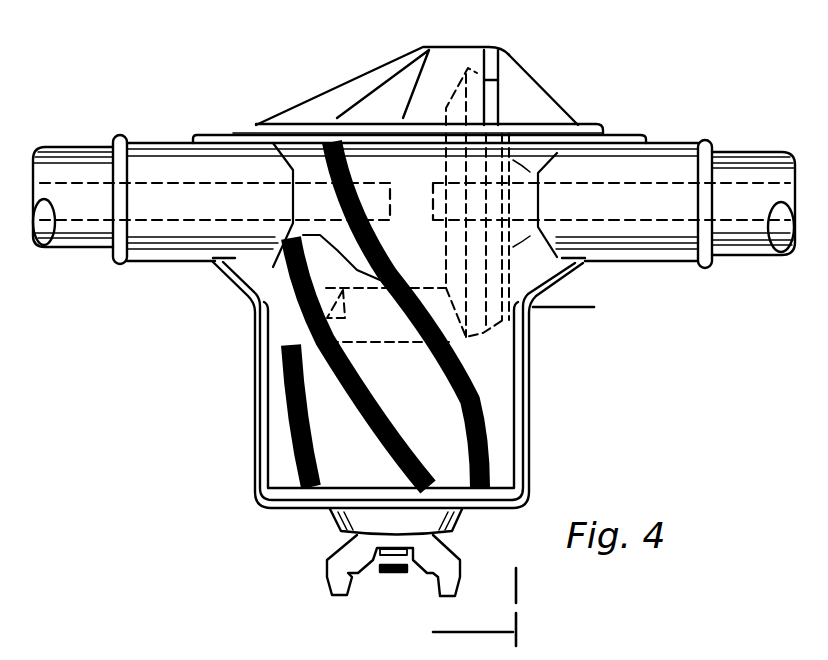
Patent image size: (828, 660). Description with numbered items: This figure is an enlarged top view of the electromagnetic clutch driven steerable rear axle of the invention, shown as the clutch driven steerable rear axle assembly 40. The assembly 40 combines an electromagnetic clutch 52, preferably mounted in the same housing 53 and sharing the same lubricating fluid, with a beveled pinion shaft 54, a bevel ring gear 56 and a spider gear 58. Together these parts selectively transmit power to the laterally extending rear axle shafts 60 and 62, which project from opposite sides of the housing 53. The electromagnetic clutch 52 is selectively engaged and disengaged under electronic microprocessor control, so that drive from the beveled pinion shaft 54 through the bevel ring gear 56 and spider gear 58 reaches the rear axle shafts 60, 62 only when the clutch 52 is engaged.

The clutch driven steerable rear axle assembly 40 is at (247, 93).
The electromagnetic clutch 52 is at (283, 370).
The housing 53 is at (220, 134).
The beveled pinion shaft 54 is at (300, 318).
The bevel ring gear 56 is at (498, 103).
The spider gear 58 is at (373, 123).
The rear axle shaft 60 is at (655, 184).
The rear axle shaft 62 is at (177, 183).